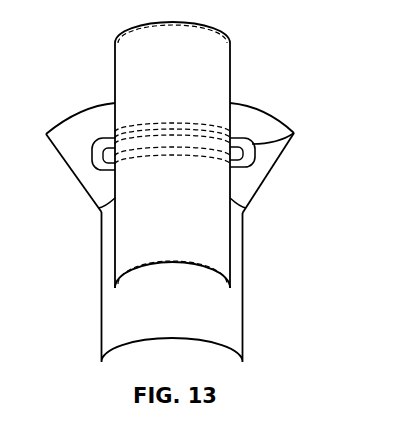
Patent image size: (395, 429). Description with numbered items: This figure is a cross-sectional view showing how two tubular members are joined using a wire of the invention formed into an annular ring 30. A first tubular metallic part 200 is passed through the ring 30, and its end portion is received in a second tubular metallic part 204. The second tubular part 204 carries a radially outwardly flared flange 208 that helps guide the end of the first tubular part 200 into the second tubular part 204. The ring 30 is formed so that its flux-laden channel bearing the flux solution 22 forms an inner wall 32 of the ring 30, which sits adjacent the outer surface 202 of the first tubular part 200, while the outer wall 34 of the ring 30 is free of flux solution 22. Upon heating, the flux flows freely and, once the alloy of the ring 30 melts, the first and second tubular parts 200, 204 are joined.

The first tubular metallic part 200 is at (222, 73).
The outer surface 202 is at (246, 204).
The second tubular metallic part 204 is at (243, 287).
The radially outwardly flared flange 208 is at (279, 115).
The flux solution 22 is at (265, 174).
The outer wall 34 is at (295, 132).
The annular ring 30 is at (100, 136).
The inner wall 32 is at (124, 162).